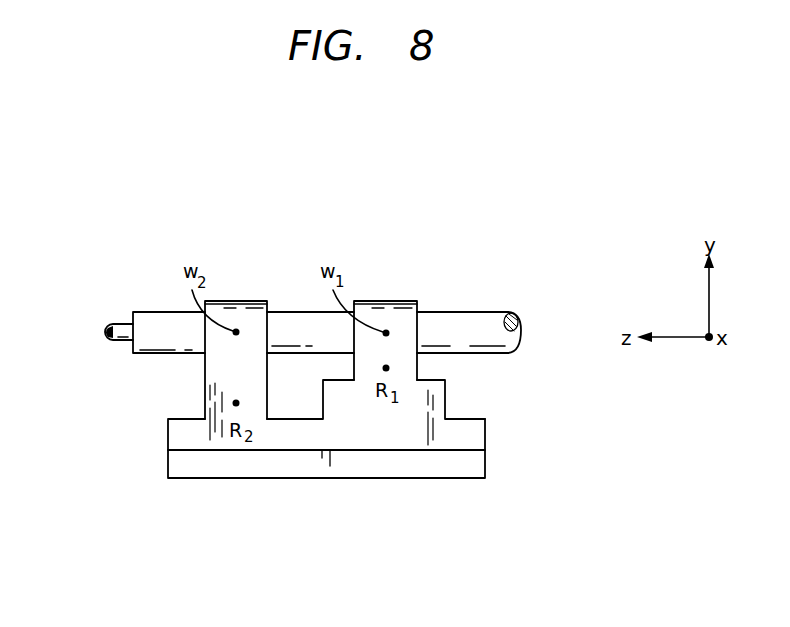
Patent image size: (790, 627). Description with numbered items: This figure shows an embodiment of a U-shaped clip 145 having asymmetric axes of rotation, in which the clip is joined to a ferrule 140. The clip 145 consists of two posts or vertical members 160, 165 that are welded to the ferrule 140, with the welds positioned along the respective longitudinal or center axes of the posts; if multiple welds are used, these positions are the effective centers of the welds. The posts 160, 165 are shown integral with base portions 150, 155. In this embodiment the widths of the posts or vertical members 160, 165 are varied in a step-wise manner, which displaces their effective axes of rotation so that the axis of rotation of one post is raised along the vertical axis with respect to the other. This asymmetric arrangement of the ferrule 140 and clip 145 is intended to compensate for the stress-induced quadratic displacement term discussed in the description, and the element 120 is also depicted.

The shaft end nub 120 is at (123, 322).
The ferrule 140 is at (482, 312).
The U-shaped clip 145 is at (393, 391).
The base portion 150 is at (477, 467).
The base portion 155 is at (393, 464).
The post or vertical member 160 is at (383, 301).
The post or vertical member 165 is at (242, 301).